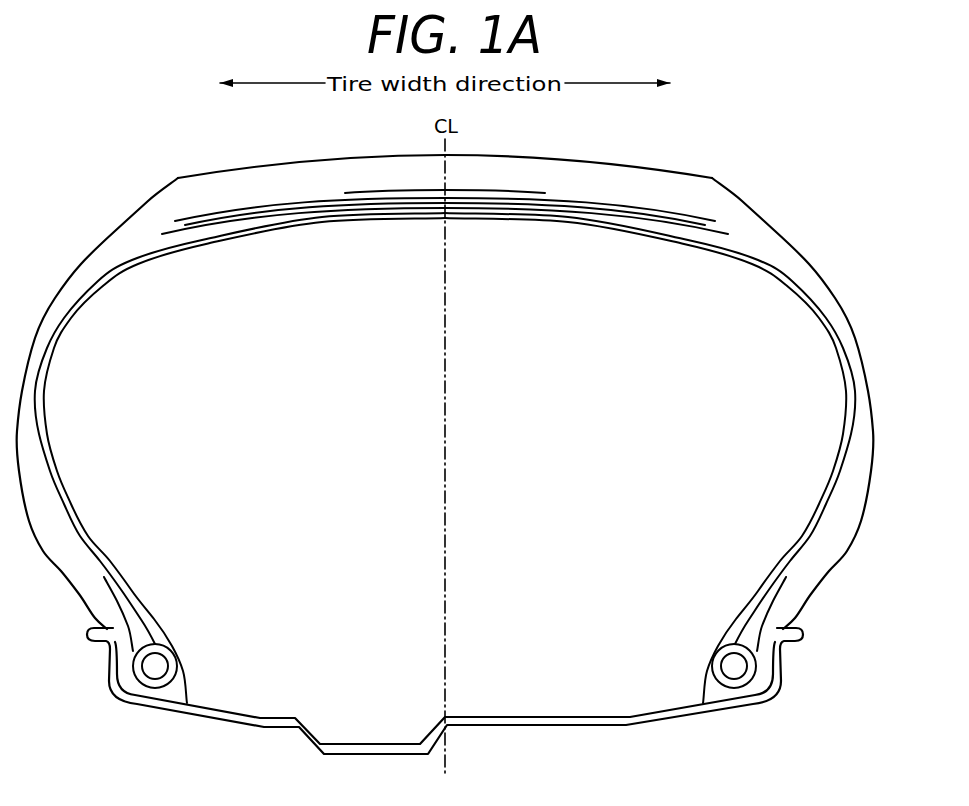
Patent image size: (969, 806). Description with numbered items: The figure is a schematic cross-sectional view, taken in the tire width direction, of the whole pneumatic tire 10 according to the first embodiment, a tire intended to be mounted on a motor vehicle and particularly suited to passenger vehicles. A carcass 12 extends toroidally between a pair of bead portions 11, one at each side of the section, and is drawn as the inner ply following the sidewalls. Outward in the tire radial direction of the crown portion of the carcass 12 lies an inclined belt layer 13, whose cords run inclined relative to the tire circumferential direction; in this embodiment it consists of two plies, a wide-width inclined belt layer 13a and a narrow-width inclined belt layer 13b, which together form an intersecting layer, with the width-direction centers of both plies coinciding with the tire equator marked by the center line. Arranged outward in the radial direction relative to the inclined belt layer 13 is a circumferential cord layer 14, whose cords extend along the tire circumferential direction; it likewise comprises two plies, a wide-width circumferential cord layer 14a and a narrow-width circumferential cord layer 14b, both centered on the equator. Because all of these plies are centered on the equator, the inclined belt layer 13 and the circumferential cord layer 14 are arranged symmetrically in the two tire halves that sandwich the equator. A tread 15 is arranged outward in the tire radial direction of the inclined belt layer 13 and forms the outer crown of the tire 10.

The pneumatic tire 10 is at (453, 326).
The bead portion 11 is at (183, 597).
The carcass 12 is at (77, 533).
The inclined belt layer 13 is at (445, 273).
The wide-width inclined belt layer 13a is at (263, 218).
The narrow-width inclined belt layer 13b is at (313, 204).
The circumferential cord layer 14 is at (445, 267).
The wide-width circumferential cord layer 14a is at (555, 198).
The narrow-width circumferential cord layer 14b is at (508, 192).
The tread 15 is at (553, 176).